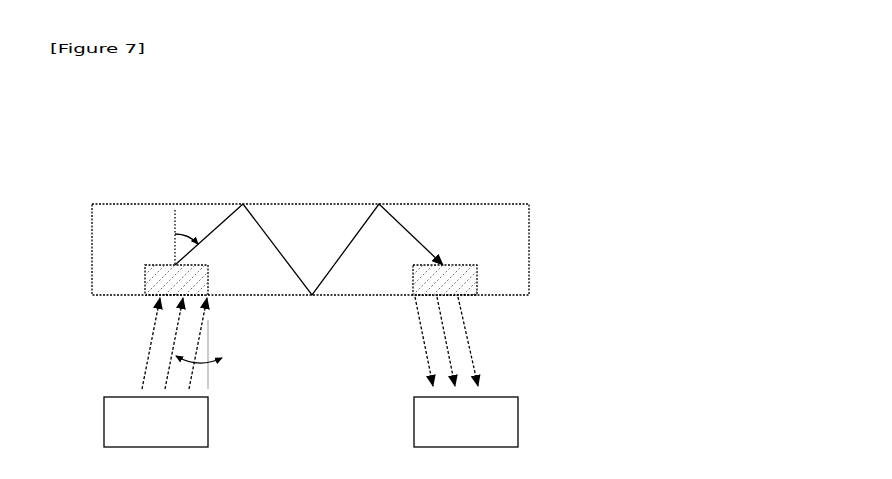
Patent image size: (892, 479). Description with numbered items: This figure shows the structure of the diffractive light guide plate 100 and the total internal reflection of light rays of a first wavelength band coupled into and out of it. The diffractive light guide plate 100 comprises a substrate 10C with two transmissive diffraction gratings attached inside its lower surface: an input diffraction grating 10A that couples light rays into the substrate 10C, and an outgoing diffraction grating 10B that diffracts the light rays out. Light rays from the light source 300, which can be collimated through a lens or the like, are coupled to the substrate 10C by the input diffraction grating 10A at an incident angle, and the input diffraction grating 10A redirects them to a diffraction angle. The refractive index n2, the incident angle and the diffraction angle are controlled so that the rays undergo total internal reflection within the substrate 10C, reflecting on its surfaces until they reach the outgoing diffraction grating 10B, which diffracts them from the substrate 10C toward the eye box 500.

The diffractive light guide plate 100 is at (488, 149).
The substrate 10C is at (508, 204).
The input diffraction grating 10A is at (150, 297).
The outgoing diffraction grating 10B is at (470, 297).
The light source 300 is at (104, 421).
The eye box 500 is at (518, 420).
The refractive index n2 is at (125, 287).